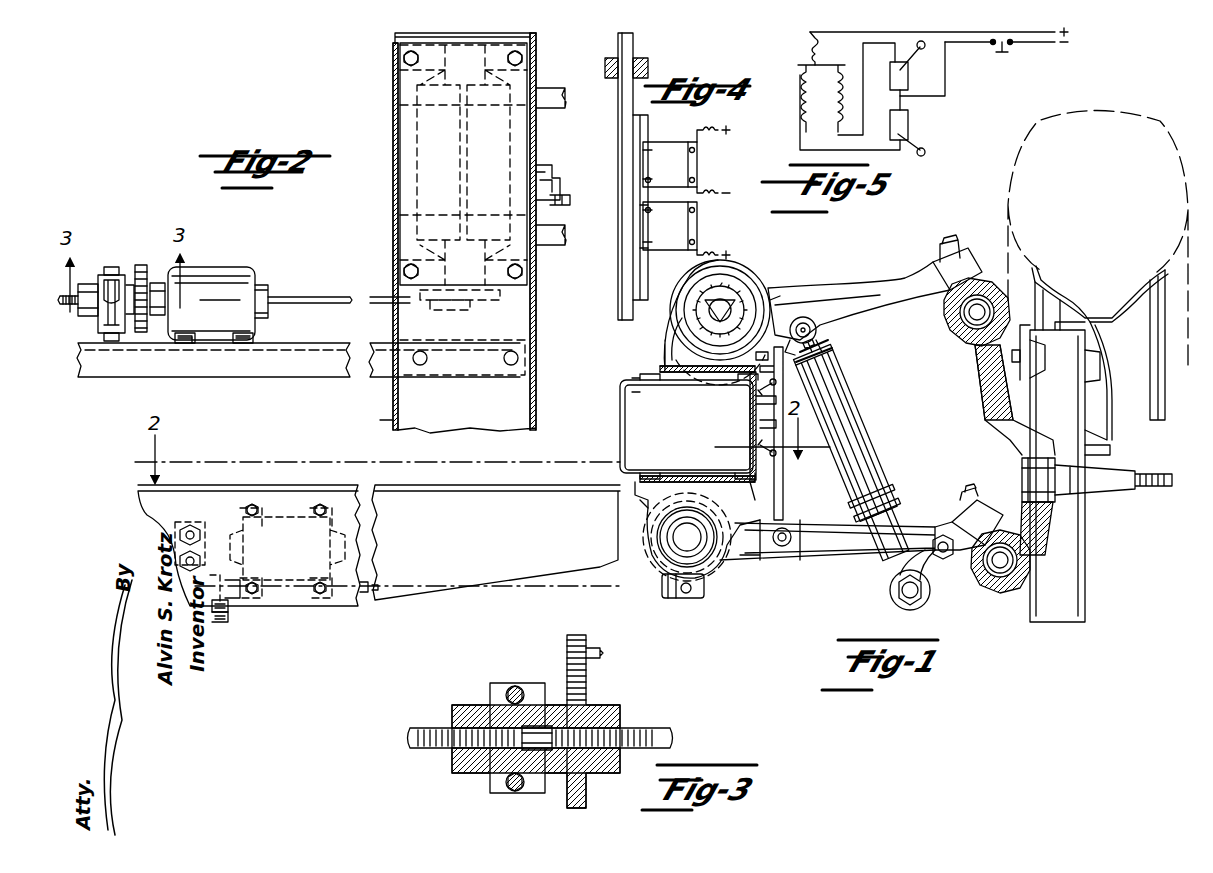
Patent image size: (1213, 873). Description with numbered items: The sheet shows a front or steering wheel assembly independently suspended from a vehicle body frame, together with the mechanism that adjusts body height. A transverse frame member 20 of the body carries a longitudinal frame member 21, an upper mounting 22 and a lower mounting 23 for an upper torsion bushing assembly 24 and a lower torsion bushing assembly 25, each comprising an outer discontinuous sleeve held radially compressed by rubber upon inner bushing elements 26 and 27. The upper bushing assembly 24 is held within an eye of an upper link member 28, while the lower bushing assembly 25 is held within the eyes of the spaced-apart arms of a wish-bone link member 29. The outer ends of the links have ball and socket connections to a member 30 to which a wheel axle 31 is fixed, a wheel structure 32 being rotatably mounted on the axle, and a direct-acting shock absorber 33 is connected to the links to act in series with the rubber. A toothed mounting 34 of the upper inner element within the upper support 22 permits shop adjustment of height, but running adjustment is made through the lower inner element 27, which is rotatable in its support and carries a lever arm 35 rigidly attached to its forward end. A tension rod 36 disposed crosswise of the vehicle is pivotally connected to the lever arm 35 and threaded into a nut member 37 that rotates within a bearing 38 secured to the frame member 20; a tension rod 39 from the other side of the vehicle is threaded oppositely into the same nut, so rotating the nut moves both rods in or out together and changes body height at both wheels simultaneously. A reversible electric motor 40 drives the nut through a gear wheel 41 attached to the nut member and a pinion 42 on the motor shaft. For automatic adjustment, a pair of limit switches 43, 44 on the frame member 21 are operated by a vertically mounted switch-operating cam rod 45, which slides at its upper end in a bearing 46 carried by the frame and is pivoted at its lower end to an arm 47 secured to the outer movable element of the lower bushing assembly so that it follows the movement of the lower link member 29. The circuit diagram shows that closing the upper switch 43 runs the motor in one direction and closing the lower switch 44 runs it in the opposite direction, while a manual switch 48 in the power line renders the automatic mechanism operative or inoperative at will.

In FIG. 2, the transverse frame member 20 is at (298, 360).
In FIG. 2, the longitudinal frame member 21 is at (398, 200).
In FIG. 1, the longitudinal frame member 21 is at (620, 428).
In FIG. 1, the upper mounting 22 is at (668, 362).
In FIG. 2, the lower mounting 23 is at (398, 250).
In FIG. 1, the lower mounting 23 is at (640, 505).
In FIG. 1, the upper torsion bushing assembly 24 is at (690, 306).
In FIG. 2, the lower torsion bushing assembly 25 is at (400, 172).
In FIG. 1, the lower torsion bushing assembly 25 is at (716, 570).
In FIG. 1, the inner bushing element 26 is at (726, 312).
In FIG. 1, the inner bushing element 27 is at (680, 538).
In FIG. 1, the upper link member 28 is at (850, 262).
In FIG. 2, the wish-bone link member 29 is at (548, 92).
In FIG. 1, the wish-bone link member 29 is at (830, 550).
In FIG. 1, the member 30 is at (990, 385).
In FIG. 1, the wheel axle 31 is at (1118, 478).
In FIG. 1, the wheel structure 32 is at (1168, 420).
In FIG. 1, the direct-acting shock absorber 33 is at (860, 420).
In FIG. 1, the toothed mounting 34 is at (705, 322).
In FIG. 1, the lever arm 35 is at (684, 592).
In FIG. 2, the tension rod 36 is at (333, 272).
In FIG. 1, the tension rod 36 is at (367, 595).
In FIG. 3, the tension rod 36 is at (660, 730).
In FIG. 2, the nut member 37 is at (155, 280).
In FIG. 1, the nut member 37 is at (226, 605).
In FIG. 3, the nut member 37 is at (620, 708).
In FIG. 2, the bearing 38 is at (118, 318).
In FIG. 3, the bearing 38 is at (492, 788).
In FIG. 2, the tension rod 39 is at (60, 305).
In FIG. 3, the tension rod 39 is at (435, 748).
In FIG. 2, the reversible electric motor 40 is at (232, 272).
In FIG. 1, the reversible electric motor 40 is at (278, 607).
In FIG. 2, the gear wheel 41 is at (134, 290).
In FIG. 1, the gear wheel 41 is at (215, 625).
In FIG. 3, the gear wheel 41 is at (586, 690).
In FIG. 2, the pinion 42 is at (137, 272).
In FIG. 1, the pinion 42 is at (220, 525).
In FIG. 3, the pinion 42 is at (567, 645).
In FIG. 4, the limit switch 43 is at (676, 162).
In FIG. 5, the limit switch 43 is at (905, 78).
In FIG. 1, the limit switch 43 is at (758, 408).
In FIG. 2, the limit switch 44 is at (545, 168).
In FIG. 4, the limit switch 44 is at (676, 226).
In FIG. 5, the limit switch 44 is at (905, 121).
In FIG. 1, the limit switch 44 is at (758, 443).
In FIG. 4, the switch-operating cam rod 45 is at (622, 298).
In FIG. 1, the switch-operating cam rod 45 is at (780, 480).
In FIG. 4, the bearing 46 is at (645, 62).
In FIG. 1, the bearing 46 is at (826, 370).
In FIG. 2, the arm 47 is at (548, 202).
In FIG. 1, the arm 47 is at (766, 545).
In FIG. 5, the manual switch 48 is at (1000, 50).